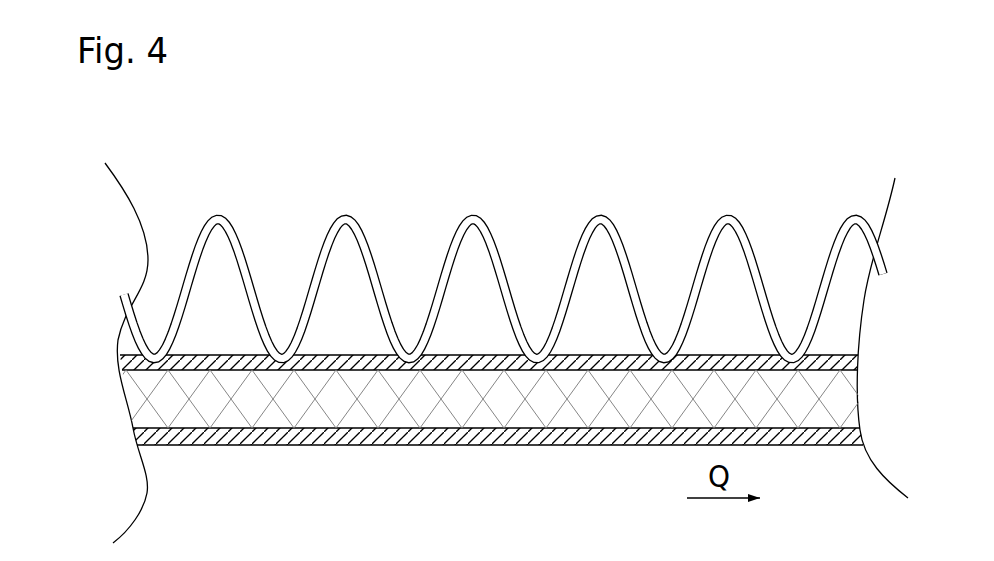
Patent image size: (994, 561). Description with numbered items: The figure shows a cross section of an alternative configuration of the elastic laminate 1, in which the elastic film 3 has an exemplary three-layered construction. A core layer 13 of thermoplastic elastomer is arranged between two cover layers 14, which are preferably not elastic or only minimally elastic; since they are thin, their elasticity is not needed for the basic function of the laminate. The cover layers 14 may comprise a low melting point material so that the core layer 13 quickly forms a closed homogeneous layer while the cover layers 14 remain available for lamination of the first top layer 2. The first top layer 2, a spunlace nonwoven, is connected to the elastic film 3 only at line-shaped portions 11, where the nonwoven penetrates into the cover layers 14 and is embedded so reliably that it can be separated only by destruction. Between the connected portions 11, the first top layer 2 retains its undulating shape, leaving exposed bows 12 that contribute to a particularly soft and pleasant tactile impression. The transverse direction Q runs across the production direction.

The elastic laminate 1 is at (477, 343).
The first top layer 2 is at (477, 334).
The elastic film 3 is at (445, 429).
The line-shaped portions 11 is at (160, 360).
The exposed bows 12 is at (235, 230).
The core layer 13 is at (137, 398).
The cover layers 14 is at (122, 363).